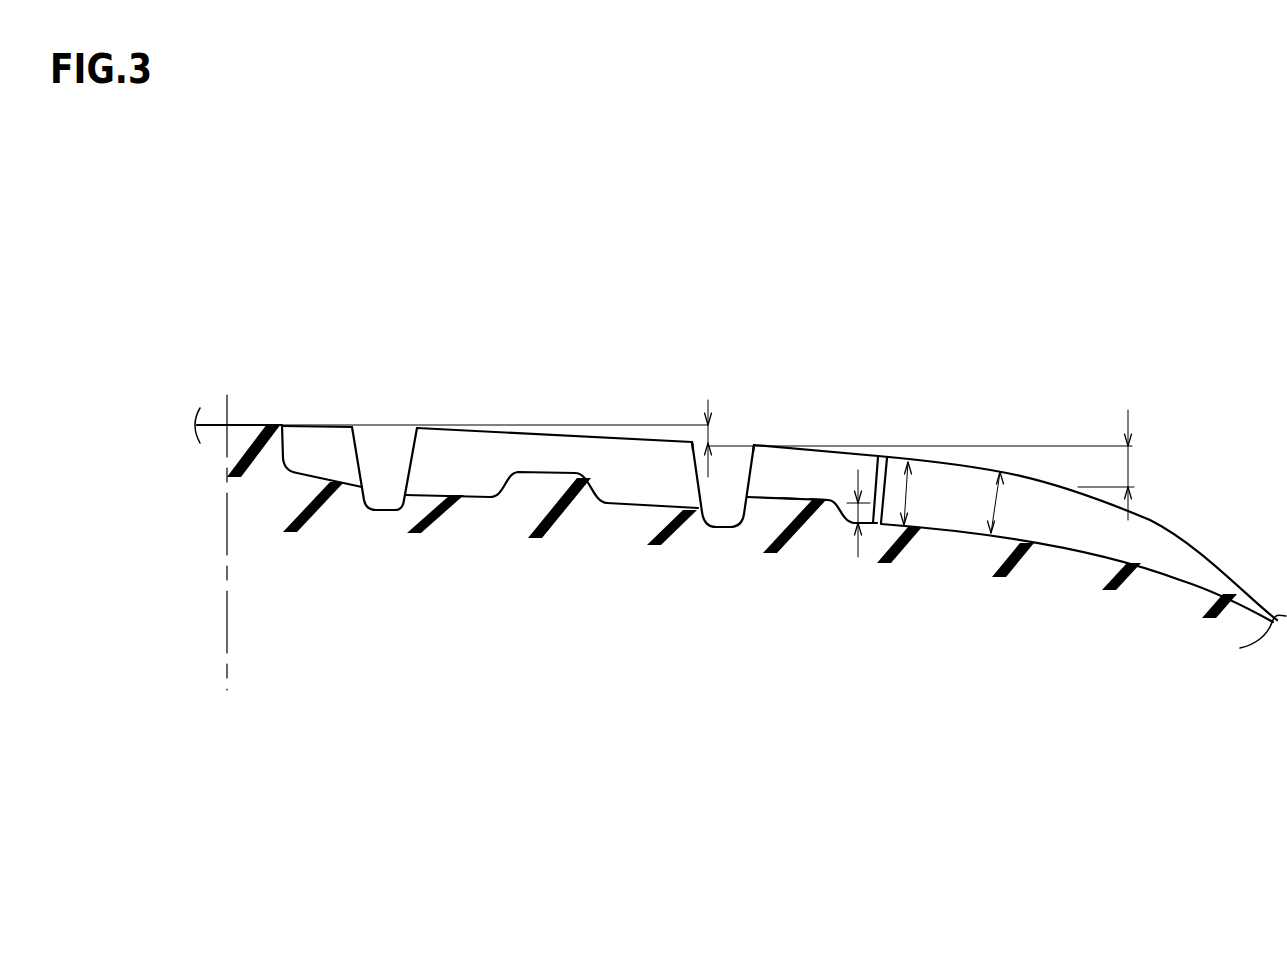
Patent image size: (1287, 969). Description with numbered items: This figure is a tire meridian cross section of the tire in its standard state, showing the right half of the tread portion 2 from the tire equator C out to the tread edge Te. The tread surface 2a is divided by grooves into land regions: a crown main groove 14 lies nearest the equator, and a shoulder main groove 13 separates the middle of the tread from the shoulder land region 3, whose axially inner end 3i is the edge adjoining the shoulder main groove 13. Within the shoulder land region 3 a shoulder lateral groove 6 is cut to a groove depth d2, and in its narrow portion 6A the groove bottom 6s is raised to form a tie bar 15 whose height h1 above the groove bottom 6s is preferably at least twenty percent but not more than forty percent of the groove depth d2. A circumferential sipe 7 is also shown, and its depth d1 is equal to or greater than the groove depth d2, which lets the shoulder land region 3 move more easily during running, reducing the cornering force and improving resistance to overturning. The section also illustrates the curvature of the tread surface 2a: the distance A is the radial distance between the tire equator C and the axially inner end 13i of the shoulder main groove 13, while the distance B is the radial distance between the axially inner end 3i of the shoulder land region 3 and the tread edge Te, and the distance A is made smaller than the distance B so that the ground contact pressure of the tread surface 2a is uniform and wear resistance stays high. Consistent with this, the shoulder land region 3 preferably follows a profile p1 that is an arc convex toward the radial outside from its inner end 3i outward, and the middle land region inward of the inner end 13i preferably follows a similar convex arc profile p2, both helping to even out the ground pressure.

The tread portion 2 is at (1138, 307).
The tread surface 2a is at (303, 421).
The shoulder land region 3 is at (1007, 370).
The axially inner end of the shoulder land region 3i is at (757, 445).
The shoulder lateral groove 6 is at (1033, 503).
The narrow portion 6A is at (787, 490).
The groove bottom 6s is at (943, 532).
The circumferential sipe 7 is at (884, 456).
The shoulder main groove 13 is at (728, 477).
The axially inner end of the shoulder main groove 13i is at (692, 442).
The crown main groove 14 is at (380, 437).
The tie bar 15 is at (820, 498).
The distance A is at (709, 437).
The distance B is at (931, 465).
The tire equator C is at (227, 526).
The tread edge Te is at (1077, 487).
The profile of the shoulder land region p1 is at (955, 465).
The profile of the middle land region p2 is at (547, 432).
The height of the tie bar h1 is at (868, 527).
The depth of the circumferential sipe d1 is at (912, 500).
The groove depth of the shoulder lateral groove d2 is at (998, 507).